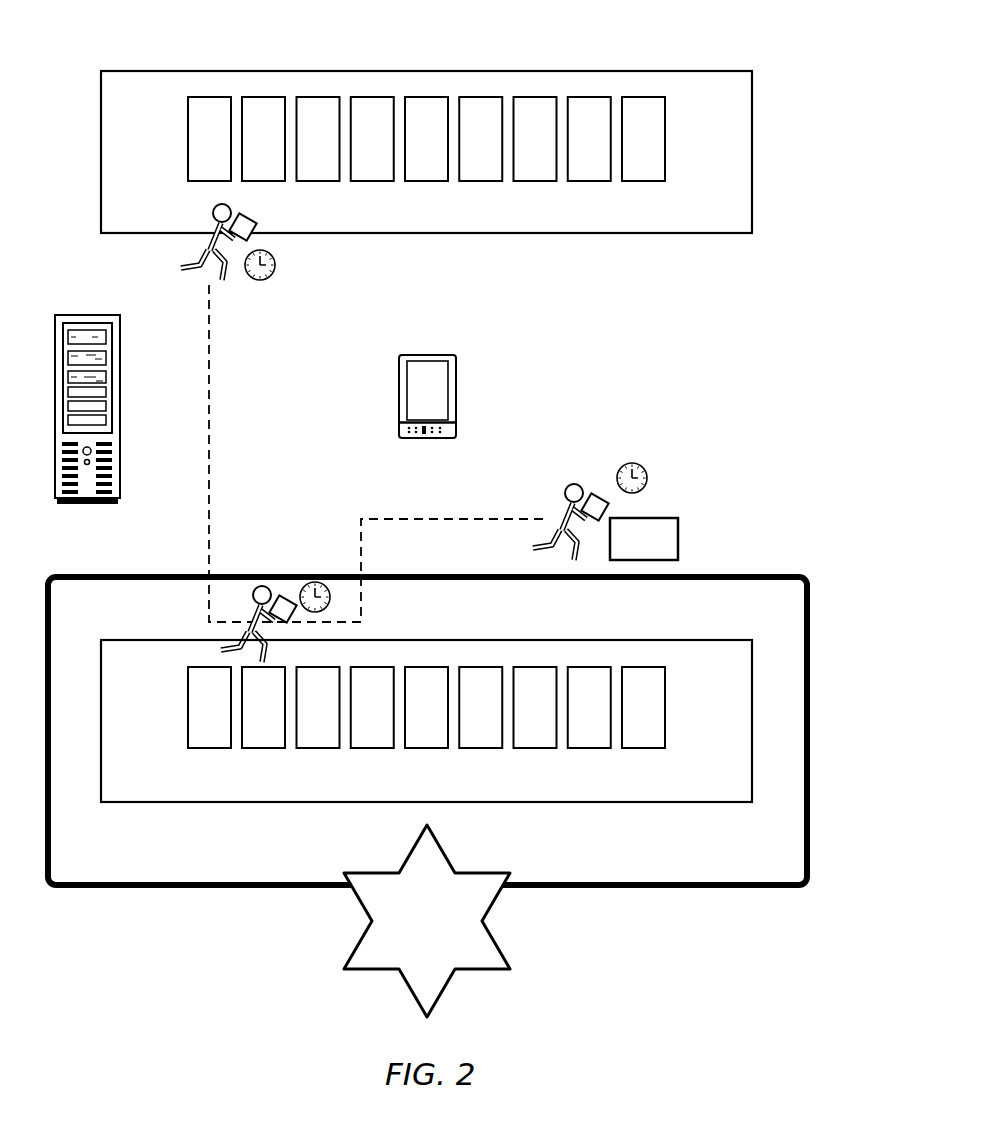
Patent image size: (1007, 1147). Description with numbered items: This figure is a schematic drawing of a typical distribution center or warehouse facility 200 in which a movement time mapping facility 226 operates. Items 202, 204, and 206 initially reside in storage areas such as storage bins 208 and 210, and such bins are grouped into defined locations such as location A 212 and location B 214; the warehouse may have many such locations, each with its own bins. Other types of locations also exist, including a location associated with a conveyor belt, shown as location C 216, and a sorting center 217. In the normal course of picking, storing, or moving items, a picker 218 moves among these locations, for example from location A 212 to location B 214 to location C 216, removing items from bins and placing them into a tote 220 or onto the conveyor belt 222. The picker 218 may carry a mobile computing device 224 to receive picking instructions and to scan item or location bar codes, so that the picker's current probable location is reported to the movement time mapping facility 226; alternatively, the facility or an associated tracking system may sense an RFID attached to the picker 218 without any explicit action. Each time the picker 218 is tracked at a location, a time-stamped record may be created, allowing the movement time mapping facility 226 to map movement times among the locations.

The warehouse facility 200 is at (696, 44).
The item 202 is at (253, 220).
The item 204 is at (287, 598).
The item 206 is at (598, 493).
The storage bin 208 is at (254, 97).
The storage bin 210 is at (259, 748).
The location A 212 is at (426, 136).
The location B 214 is at (426, 721).
The location C 216 is at (454, 689).
The sorting center 217 is at (409, 954).
The picker 218 is at (209, 226).
The tote 220 is at (643, 518).
The conveyor belt 222 is at (802, 575).
The mobile computing device 224 is at (420, 355).
The movement time mapping facility 226 is at (74, 315).